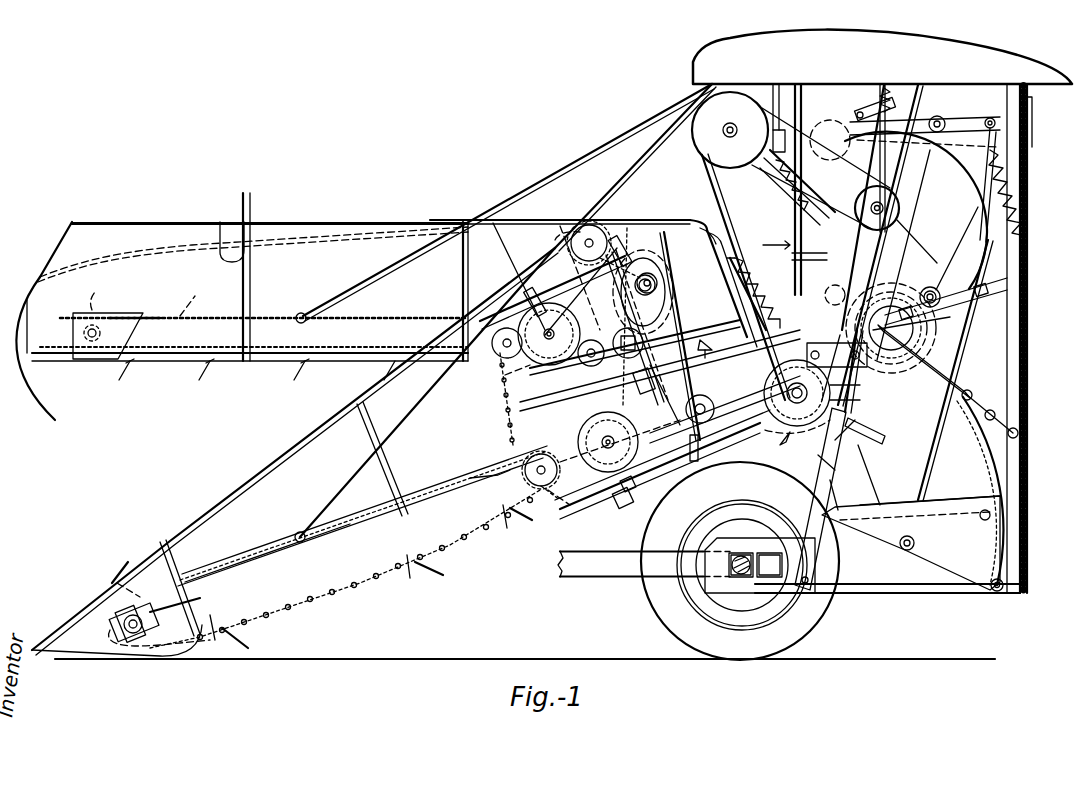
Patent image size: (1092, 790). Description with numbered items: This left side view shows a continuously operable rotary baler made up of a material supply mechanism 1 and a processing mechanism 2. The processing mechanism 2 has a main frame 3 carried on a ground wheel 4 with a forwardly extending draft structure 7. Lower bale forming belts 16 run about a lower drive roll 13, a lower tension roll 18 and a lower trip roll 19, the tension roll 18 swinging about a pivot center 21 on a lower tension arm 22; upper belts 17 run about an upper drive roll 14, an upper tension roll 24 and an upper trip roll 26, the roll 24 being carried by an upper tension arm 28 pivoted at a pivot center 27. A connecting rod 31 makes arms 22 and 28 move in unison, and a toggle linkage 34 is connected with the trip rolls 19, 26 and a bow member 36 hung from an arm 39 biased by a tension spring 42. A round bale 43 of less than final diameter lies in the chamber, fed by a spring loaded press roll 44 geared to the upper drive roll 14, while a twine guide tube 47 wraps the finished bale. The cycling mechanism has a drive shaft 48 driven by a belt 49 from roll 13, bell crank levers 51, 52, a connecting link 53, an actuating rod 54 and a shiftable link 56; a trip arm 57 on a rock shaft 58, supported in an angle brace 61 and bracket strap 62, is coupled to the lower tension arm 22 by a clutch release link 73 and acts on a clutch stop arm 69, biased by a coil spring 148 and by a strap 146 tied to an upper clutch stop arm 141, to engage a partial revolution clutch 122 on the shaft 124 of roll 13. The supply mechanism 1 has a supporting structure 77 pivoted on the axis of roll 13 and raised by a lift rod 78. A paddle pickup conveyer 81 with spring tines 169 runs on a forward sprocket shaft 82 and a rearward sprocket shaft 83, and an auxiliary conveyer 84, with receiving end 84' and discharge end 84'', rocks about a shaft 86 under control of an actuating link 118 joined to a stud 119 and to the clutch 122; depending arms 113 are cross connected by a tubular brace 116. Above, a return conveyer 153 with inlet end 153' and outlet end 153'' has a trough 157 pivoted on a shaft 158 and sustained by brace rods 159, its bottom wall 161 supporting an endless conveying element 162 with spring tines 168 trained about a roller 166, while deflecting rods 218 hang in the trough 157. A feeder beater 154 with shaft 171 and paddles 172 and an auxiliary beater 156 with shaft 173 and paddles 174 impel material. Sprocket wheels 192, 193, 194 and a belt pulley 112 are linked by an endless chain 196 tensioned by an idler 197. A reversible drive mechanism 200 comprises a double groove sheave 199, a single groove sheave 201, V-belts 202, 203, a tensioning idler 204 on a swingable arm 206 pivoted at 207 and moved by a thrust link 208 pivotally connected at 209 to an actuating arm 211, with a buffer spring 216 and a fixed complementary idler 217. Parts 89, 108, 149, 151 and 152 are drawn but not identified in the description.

The material supply mechanism 1 is at (296, 428).
The processing mechanism 2 is at (1028, 345).
The main frame 3 is at (935, 585).
The right ground wheel 4 is at (822, 620).
The draft structure 7 is at (588, 580).
The lower drive roll 13 is at (768, 438).
The upper drive roll 14 is at (795, 190).
The lower set of bale forming belts 16 is at (913, 500).
The upper set of bale forming belts 17 is at (908, 258).
The lower tension roll 18 is at (975, 500).
The lower trip roll 19 is at (911, 342).
The pivot center 21 is at (838, 514).
The lower tension arm 22 is at (948, 530).
The upper tension roll 24 is at (832, 140).
The upper trip roll 26 is at (920, 292).
The pivot center 27 is at (945, 120).
The upper tension arm 28 is at (859, 242).
The connecting rod 31 is at (935, 430).
The toggle linkage 34 is at (960, 365).
The bow member 36 is at (970, 200).
The arm 39 is at (963, 140).
The tension spring 42 is at (1018, 180).
The round bale 43 is at (895, 372).
The press roll 44 is at (825, 355).
The twine guide tube 47 is at (788, 141).
The drive shaft 48 is at (791, 160).
The belt 49 is at (740, 180).
The bell crank lever 51 is at (777, 174).
The second bell crank lever 52 is at (835, 289).
The connecting link 53 is at (800, 190).
The actuating rod 54 is at (891, 328).
The shiftable link 56 is at (866, 200).
The trip arm 57 is at (853, 426).
The rock shaft 58 is at (817, 463).
The angle brace 61 is at (910, 180).
The bracket strap 62 is at (855, 392).
The clutch stop arm 69 is at (874, 431).
The clutch release link 73 is at (868, 463).
The supporting structure 77 is at (352, 526).
The lift rod 78 is at (405, 418).
The pickup conveyer 81 is at (272, 543).
The forward sprocket shaft 82 is at (150, 624).
The rearward sprocket shaft 83 is at (545, 488).
The auxiliary conveyer 84 is at (656, 398).
The receiving end 84' is at (563, 492).
The discharge end 84'' is at (725, 406).
The shaft 86 is at (600, 438).
The bracket 89 is at (497, 478).
The frame rail 108 is at (618, 508).
The belt pulley 112 is at (588, 418).
The depending arm 113 is at (640, 490).
The tubular transverse brace 116 is at (636, 499).
The actuating link 118 is at (713, 409).
The stud 119 is at (567, 506).
The partial revolution clutch 122 is at (792, 464).
The shaft 124 is at (789, 393).
The upper clutch stop arm 141 is at (940, 323).
The strap 146 is at (862, 405).
The coil spring 148 is at (849, 494).
The rod 149 is at (915, 249).
The spring bolt 151 is at (870, 118).
The rod 152 is at (890, 130).
The return conveyer 153 is at (281, 305).
The inlet end 153' is at (516, 300).
The outlet end 153'' is at (66, 312).
The feeder beater 154 is at (680, 243).
The auxiliary beater 156 is at (630, 228).
The trough 157 is at (64, 236).
The shaft 158 is at (525, 383).
The brace rods 159 is at (378, 284).
The bottom wall 161 is at (158, 318).
The endless conveying element 162 is at (205, 302).
The roller 166 is at (108, 336).
The spring tines 168 is at (140, 374).
The spring tines 169 is at (380, 490).
The shaft 171 is at (637, 286).
The beater paddles 172 is at (693, 313).
The shaft 173 is at (553, 292).
The beater paddles 174 is at (565, 245).
The sprocket wheel 192 is at (631, 380).
The sprocket wheel 193 is at (561, 334).
The sprocket wheel 194 is at (621, 315).
The endless chain 196 is at (506, 404).
The tensioning idler 197 is at (500, 358).
The double groove belt sheave 199 is at (730, 280).
The reversible drive mechanism 200 is at (738, 368).
The single groove belt sheave 201 is at (510, 399).
The endless V-belt 202 is at (632, 330).
The endless V-belt 203 is at (653, 344).
The tensioning idler 204 is at (638, 327).
The swingable arm 206 is at (642, 325).
The pivot 207 is at (714, 224).
The thrust link 208 is at (682, 336).
The pivotal connection 209 is at (707, 448).
The actuating arm 211 is at (620, 441).
The buffer spring 216 is at (581, 291).
The complementary idler 217 is at (591, 361).
The deflecting rods 218 is at (36, 398).